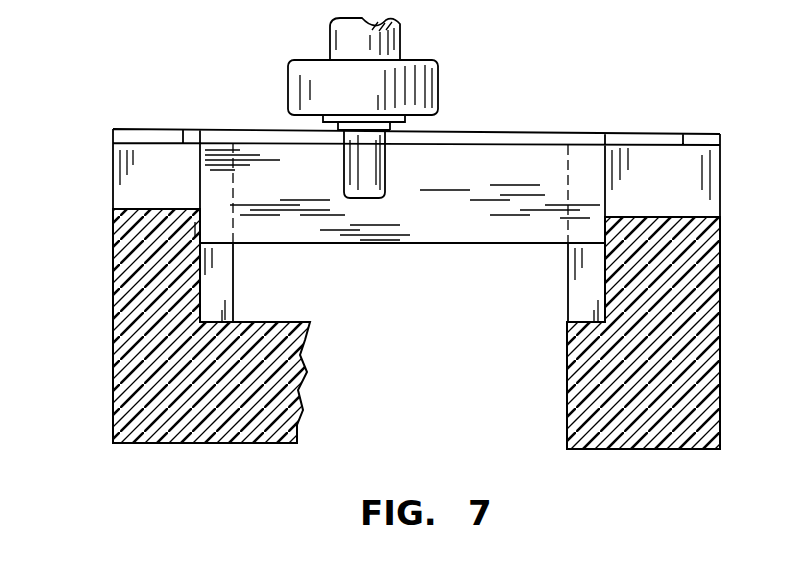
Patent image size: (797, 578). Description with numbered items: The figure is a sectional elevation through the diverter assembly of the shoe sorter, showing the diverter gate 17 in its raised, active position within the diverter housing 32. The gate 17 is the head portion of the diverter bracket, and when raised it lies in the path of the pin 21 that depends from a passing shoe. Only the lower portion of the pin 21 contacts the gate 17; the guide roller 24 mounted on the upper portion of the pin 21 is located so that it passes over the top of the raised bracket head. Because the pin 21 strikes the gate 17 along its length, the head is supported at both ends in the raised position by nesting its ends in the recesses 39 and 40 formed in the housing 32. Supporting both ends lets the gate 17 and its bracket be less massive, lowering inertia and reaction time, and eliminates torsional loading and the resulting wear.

The diverter gate 17 is at (488, 233).
The pin 21 is at (343, 148).
The guide roller 24 is at (440, 95).
The diverter housing 32 is at (113, 292).
The recess 39 is at (215, 206).
The recess 40 is at (565, 191).